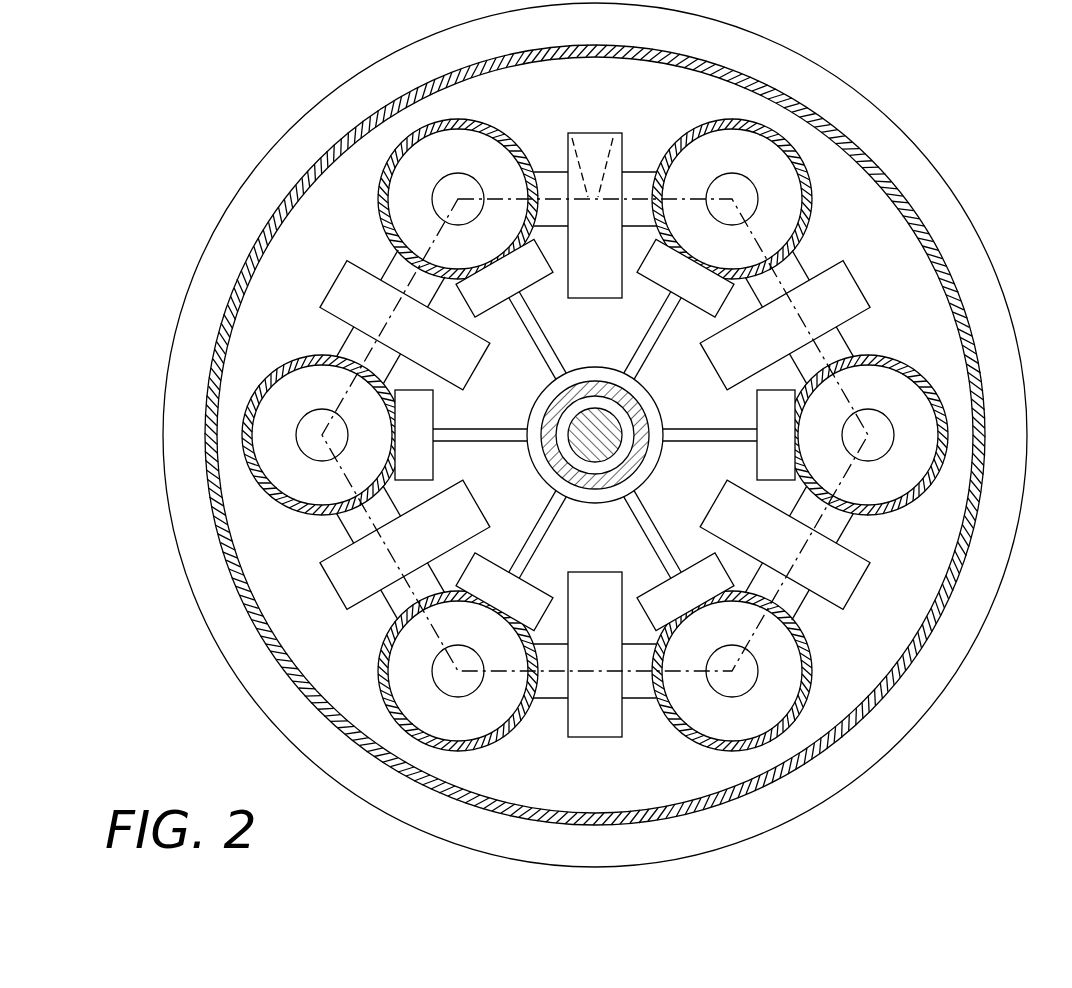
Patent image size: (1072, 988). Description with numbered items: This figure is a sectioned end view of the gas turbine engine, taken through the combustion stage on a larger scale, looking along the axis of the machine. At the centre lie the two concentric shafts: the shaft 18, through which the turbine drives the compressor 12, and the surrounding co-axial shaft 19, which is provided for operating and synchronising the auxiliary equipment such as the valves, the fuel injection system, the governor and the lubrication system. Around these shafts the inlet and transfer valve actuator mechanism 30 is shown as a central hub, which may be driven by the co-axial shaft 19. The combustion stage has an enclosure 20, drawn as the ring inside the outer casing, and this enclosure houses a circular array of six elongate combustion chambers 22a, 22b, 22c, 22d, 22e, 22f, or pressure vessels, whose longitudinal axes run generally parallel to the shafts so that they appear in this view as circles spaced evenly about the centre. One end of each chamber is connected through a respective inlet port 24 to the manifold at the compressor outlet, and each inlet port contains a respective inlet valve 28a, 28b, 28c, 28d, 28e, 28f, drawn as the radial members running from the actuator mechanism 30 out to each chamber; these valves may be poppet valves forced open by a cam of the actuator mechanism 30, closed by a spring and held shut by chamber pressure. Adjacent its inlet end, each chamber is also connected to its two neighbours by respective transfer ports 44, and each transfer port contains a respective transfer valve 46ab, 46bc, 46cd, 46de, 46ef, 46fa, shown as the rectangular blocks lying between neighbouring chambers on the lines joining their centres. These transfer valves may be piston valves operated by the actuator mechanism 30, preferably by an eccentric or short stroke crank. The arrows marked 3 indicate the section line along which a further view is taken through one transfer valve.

The compressor 12 is at (868, 100).
The enclosure 20 is at (902, 188).
The combustion chamber 22a is at (380, 208).
The combustion chamber 22b is at (292, 358).
The combustion chamber 22c is at (383, 644).
The combustion chamber 22d is at (692, 742).
The combustion chamber 22e is at (909, 507).
The combustion chamber 22f is at (812, 218).
The inlet port 24 is at (757, 668).
The inlet valve 28a is at (548, 329).
The inlet valve 28b is at (433, 423).
The inlet valve 28c is at (543, 542).
The inlet valve 28d is at (652, 542).
The inlet valve 28e is at (757, 425).
The inlet valve 28f is at (649, 339).
The inlet and transfer valve actuator mechanism 30 is at (528, 446).
The co-axial shaft 19 is at (558, 473).
The shaft 18 is at (623, 437).
The transfer port 44 is at (544, 170).
The transfer valve 46ab is at (346, 279).
The transfer valve 46bc is at (332, 553).
The transfer valve 46cd is at (563, 679).
The transfer valve 46de is at (848, 596).
The transfer valve 46ef is at (862, 310).
The transfer valve 46fa is at (584, 138).
The section line 3- 3 is at (570, 131).